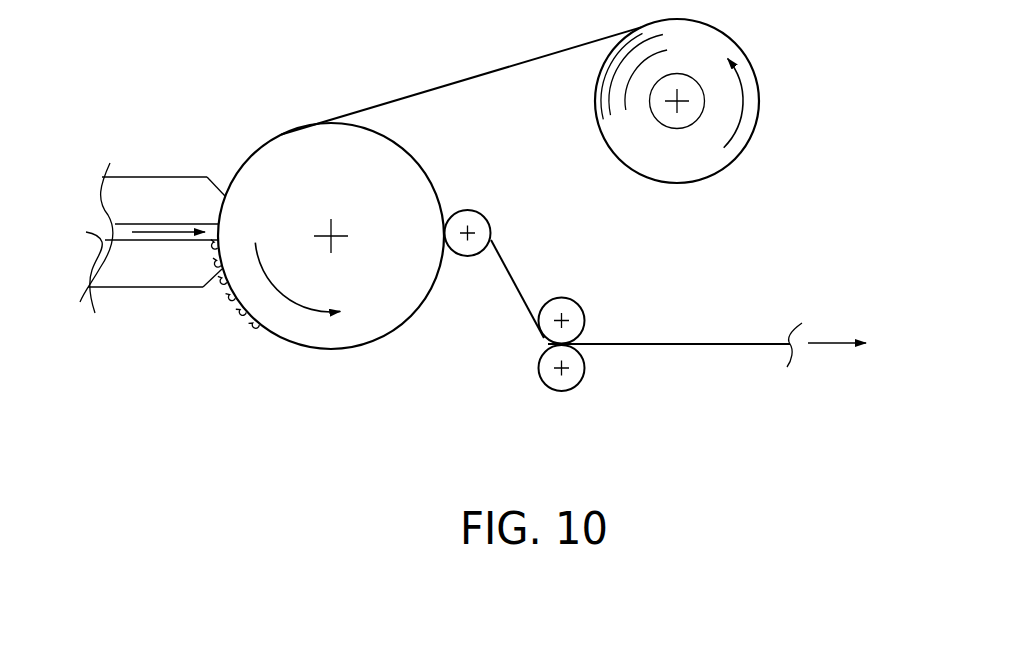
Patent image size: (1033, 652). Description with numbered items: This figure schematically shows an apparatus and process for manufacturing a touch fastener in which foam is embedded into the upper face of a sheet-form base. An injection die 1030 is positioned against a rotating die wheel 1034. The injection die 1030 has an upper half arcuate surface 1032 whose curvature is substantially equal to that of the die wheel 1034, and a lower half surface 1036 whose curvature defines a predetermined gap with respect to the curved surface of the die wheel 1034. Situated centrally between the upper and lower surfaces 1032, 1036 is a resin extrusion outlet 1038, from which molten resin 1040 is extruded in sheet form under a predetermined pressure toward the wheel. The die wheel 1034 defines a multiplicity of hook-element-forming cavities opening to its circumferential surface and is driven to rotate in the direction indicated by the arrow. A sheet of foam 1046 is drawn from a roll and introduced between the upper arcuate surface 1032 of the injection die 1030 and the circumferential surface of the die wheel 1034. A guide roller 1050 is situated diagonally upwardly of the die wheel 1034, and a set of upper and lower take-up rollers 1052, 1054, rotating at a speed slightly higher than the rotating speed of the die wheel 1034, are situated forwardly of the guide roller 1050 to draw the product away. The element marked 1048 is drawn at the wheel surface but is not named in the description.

The injection die 1030 is at (134, 176).
The upper half arcuate surface 1032 is at (220, 205).
The die wheel 1034 is at (400, 289).
The lower half surface 1036 is at (220, 258).
The resin extrusion outlet 1038 is at (89, 289).
The molten resin 1040 is at (216, 232).
The sheet of foam 1046 is at (447, 85).
The coating layer on drum 1048 is at (262, 328).
The guide roller 1050 is at (483, 253).
The upper take-up roller 1052 is at (589, 370).
The lower take-up roller 1054 is at (563, 297).